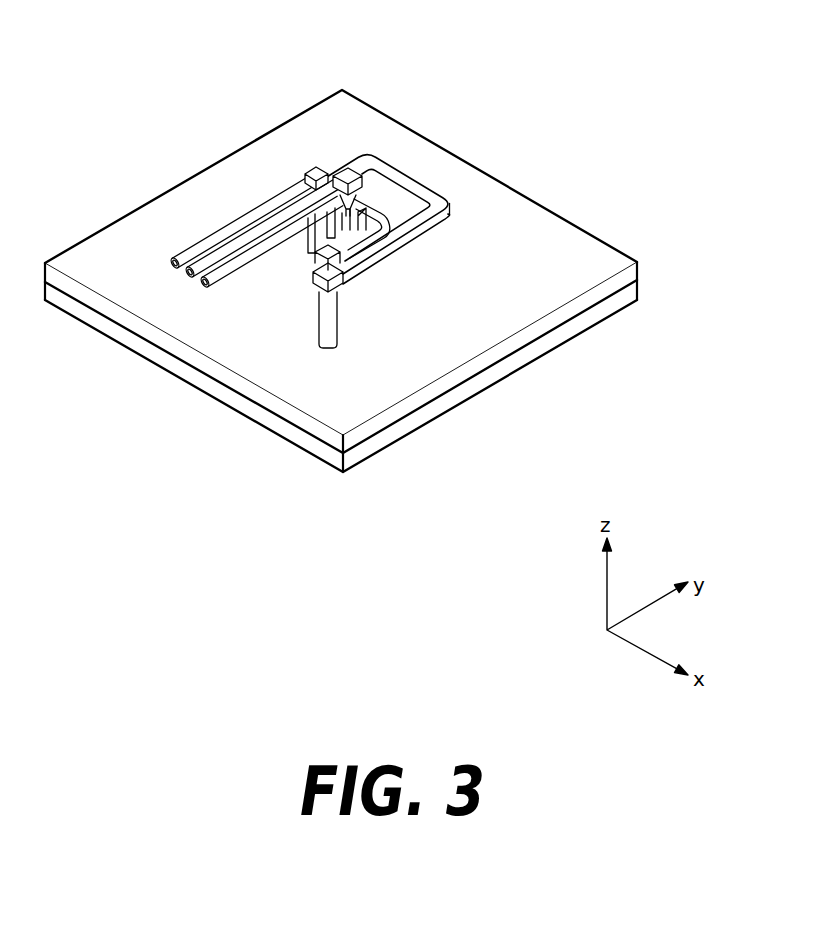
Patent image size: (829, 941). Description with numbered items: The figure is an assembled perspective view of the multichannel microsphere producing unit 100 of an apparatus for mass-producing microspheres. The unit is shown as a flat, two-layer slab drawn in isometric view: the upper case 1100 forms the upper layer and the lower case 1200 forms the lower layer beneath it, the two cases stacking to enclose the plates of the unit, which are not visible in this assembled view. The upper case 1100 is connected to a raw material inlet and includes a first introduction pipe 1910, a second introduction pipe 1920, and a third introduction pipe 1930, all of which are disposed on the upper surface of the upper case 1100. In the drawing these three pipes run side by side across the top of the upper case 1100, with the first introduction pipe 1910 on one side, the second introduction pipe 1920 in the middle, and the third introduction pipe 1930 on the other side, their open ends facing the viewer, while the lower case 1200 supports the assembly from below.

The multichannel microsphere producing unit 100 is at (95, 53).
The upper case 1100 is at (637, 273).
The lower case 1200 is at (637, 288).
The first introduction pipe 1910 is at (203, 240).
The second introduction pipe 1920 is at (174, 281).
The third introduction pipe 1930 is at (212, 292).